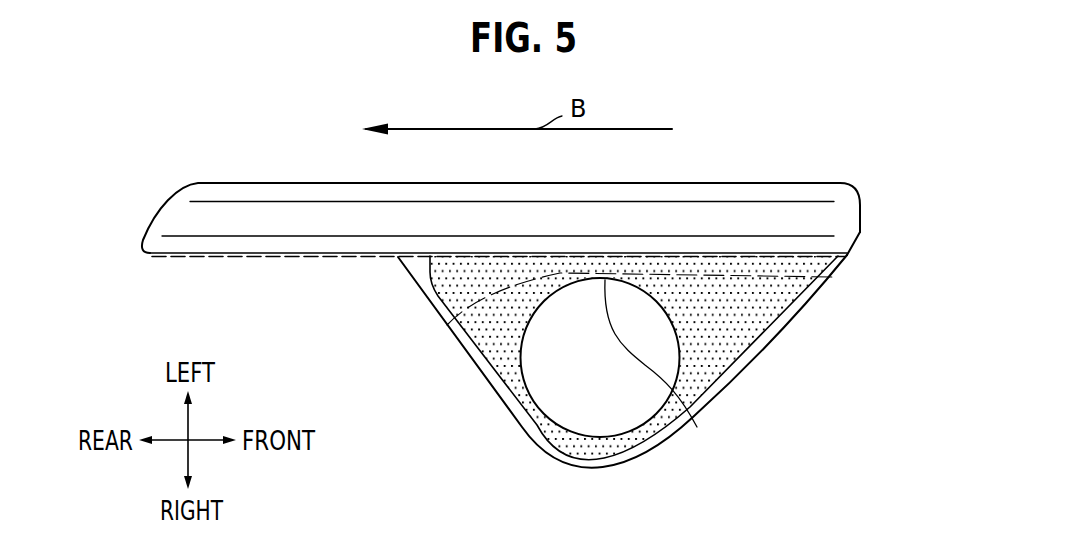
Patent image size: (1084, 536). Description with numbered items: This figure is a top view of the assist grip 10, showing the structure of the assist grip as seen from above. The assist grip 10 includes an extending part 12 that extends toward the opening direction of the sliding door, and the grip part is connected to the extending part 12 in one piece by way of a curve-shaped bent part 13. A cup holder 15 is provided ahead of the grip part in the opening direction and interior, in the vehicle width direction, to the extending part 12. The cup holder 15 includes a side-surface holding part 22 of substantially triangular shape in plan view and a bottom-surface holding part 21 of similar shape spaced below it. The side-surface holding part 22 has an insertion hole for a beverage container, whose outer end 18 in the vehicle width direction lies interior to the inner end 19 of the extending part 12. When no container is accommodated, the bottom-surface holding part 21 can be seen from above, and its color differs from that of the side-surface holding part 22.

The assist grip 10 is at (863, 190).
The extending part 12 is at (313, 183).
The bent part 13 is at (855, 218).
The cup holder 15 is at (520, 429).
The outer end 18 is at (659, 370).
The inner end 19 is at (383, 258).
The bottom-surface holding part 21 is at (610, 383).
The side-surface holding part 22 is at (733, 343).